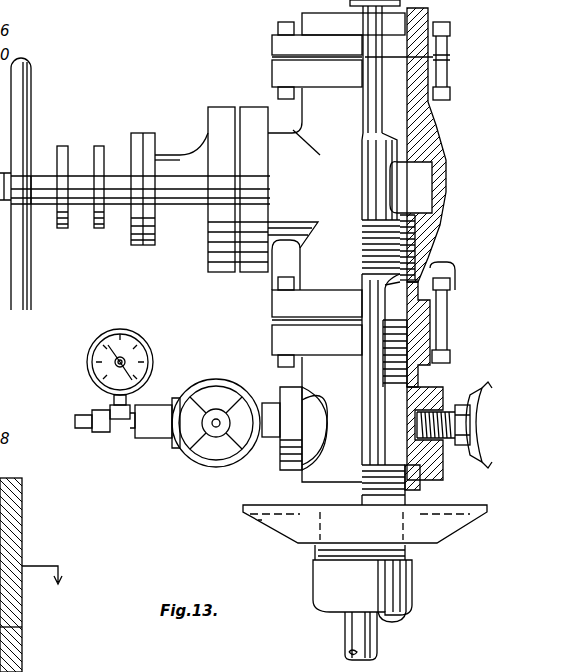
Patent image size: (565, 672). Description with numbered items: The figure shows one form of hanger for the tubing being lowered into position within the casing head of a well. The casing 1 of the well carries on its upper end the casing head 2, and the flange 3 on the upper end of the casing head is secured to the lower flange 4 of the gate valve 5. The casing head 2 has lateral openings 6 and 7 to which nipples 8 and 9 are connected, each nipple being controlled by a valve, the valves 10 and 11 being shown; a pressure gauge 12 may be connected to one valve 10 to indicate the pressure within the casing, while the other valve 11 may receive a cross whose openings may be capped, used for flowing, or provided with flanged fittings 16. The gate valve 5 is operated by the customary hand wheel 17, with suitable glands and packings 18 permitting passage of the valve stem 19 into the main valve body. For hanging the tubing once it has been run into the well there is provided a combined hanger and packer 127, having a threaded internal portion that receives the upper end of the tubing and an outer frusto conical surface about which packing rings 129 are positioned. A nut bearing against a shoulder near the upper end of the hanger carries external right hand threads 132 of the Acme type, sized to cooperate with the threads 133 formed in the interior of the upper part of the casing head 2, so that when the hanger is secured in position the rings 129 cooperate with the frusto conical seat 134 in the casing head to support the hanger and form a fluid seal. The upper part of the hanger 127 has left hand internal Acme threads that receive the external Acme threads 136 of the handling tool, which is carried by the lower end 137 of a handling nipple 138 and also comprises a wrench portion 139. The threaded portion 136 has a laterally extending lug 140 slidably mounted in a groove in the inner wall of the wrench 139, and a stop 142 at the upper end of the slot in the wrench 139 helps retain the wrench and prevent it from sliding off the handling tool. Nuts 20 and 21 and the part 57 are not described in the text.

The casing 1 is at (410, 585).
The casing head 2 is at (308, 470).
The flange 3 is at (274, 337).
The lower flange 4 is at (274, 302).
The gate valve 5 is at (446, 200).
The lateral opening 6 is at (292, 400).
The lateral opening 7 is at (438, 455).
The nipple 8 is at (268, 405).
The nipple 9 is at (456, 405).
The valve 10 is at (207, 483).
The valve 11 is at (483, 390).
The pressure gauge 12 is at (128, 333).
The flanged fitting 16 is at (44, 587).
The hand wheel 17 is at (27, 92).
The glands and packings 18 is at (112, 165).
The valve stem 19 is at (42, 204).
The nut 20 is at (452, 75).
The bolt 21 is at (452, 41).
The outlet pipe 57 is at (378, 640).
The combined hanger and packer 127 is at (400, 283).
The packing rings 129 is at (412, 255).
The external right hand threads 132 is at (415, 232).
The threads 133 is at (418, 312).
The frusto conical seat 134 is at (412, 368).
The external Acme threads 136 is at (22, 671).
The lower end 137 is at (2, 535).
The handling nipple 138 is at (380, 108).
The wrench portion 139 is at (390, 185).
The laterally extending lug 140 is at (22, 627).
The stop 142 is at (0, 470).